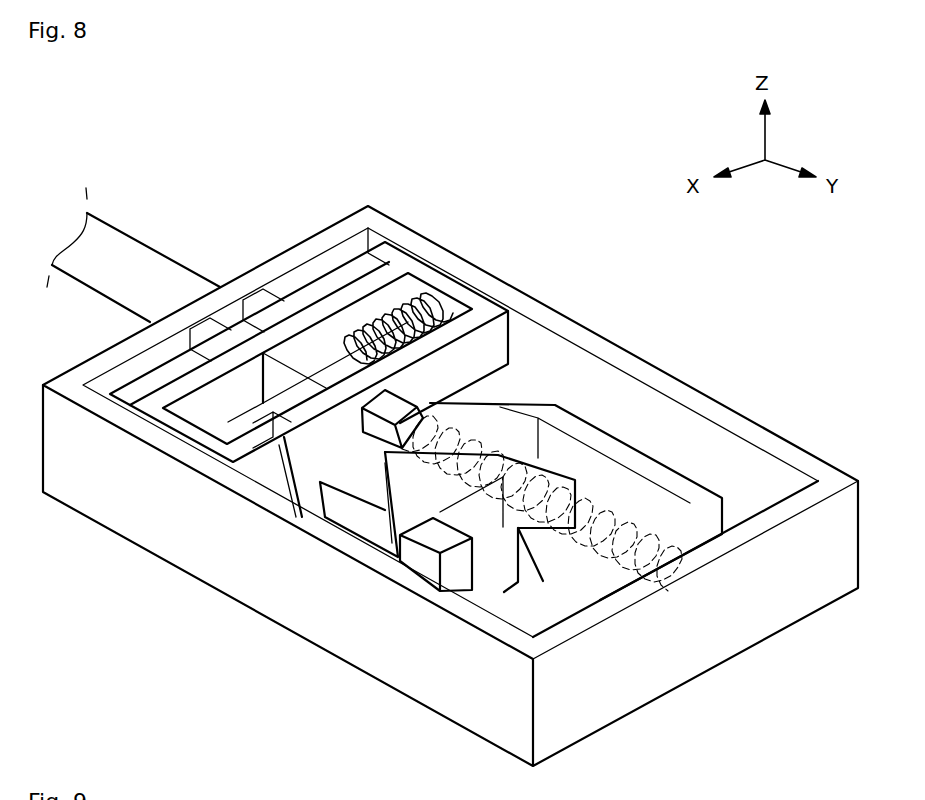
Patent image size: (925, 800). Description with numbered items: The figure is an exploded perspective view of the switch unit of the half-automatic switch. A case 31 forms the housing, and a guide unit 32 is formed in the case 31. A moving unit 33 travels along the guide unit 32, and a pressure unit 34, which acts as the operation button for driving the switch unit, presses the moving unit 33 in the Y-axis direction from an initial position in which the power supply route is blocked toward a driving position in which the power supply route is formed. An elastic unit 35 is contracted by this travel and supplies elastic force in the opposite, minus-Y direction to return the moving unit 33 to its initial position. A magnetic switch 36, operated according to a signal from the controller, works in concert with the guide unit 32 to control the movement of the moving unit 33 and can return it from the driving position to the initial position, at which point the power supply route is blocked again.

The case 31 is at (760, 630).
The guide unit 32 is at (360, 515).
The moving unit 33 is at (440, 283).
The pressure unit 34 is at (127, 249).
The elastic unit 35 is at (618, 492).
The magnetic switch 36 is at (428, 563).